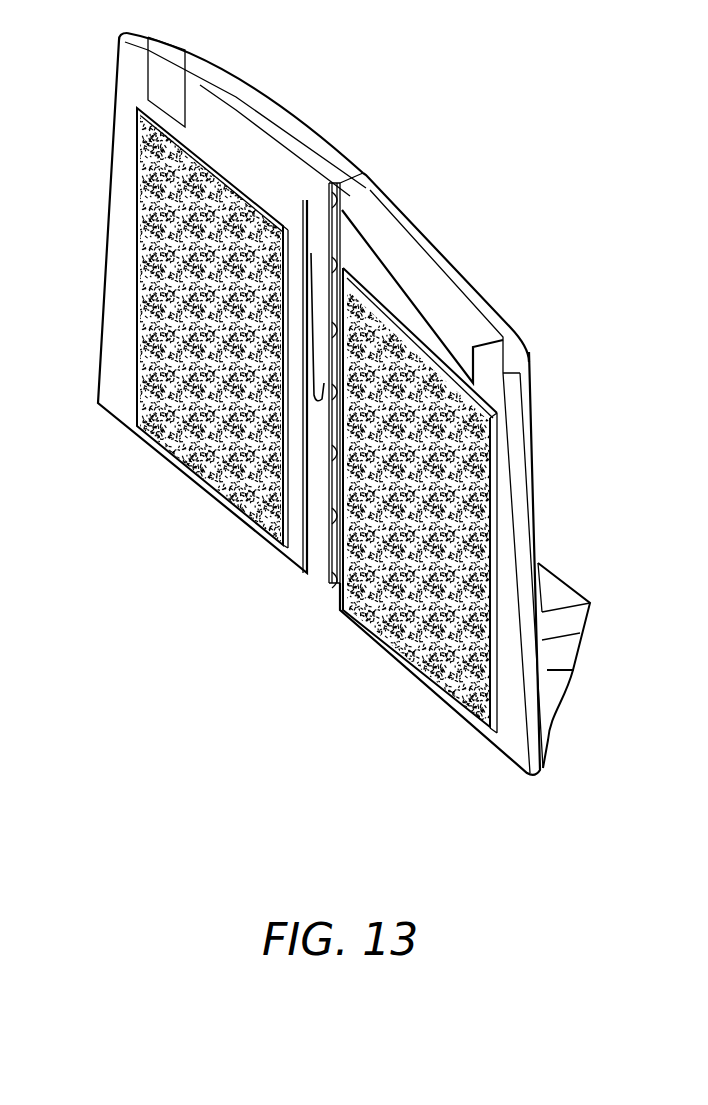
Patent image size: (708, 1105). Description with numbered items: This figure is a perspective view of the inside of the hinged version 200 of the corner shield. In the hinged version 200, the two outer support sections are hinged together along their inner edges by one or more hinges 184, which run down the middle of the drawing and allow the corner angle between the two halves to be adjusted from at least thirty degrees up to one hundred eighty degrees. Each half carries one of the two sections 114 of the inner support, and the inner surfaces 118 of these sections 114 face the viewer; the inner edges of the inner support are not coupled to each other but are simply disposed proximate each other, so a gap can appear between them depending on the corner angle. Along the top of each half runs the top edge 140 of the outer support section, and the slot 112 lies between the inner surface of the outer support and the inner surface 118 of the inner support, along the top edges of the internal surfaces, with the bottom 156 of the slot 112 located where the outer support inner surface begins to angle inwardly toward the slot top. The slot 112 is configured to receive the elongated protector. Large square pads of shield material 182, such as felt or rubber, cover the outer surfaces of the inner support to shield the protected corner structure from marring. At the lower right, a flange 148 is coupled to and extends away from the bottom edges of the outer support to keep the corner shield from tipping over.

The hinged version 200 is at (455, 95).
The slot 112 is at (212, 118).
The sections 114 is at (112, 289).
The top edge 140 is at (277, 123).
The inner surface 118 is at (205, 466).
The shield material 182 is at (313, 318).
The bottom 156 is at (316, 398).
The hinge 184 is at (332, 554).
The flange 148 is at (572, 612).